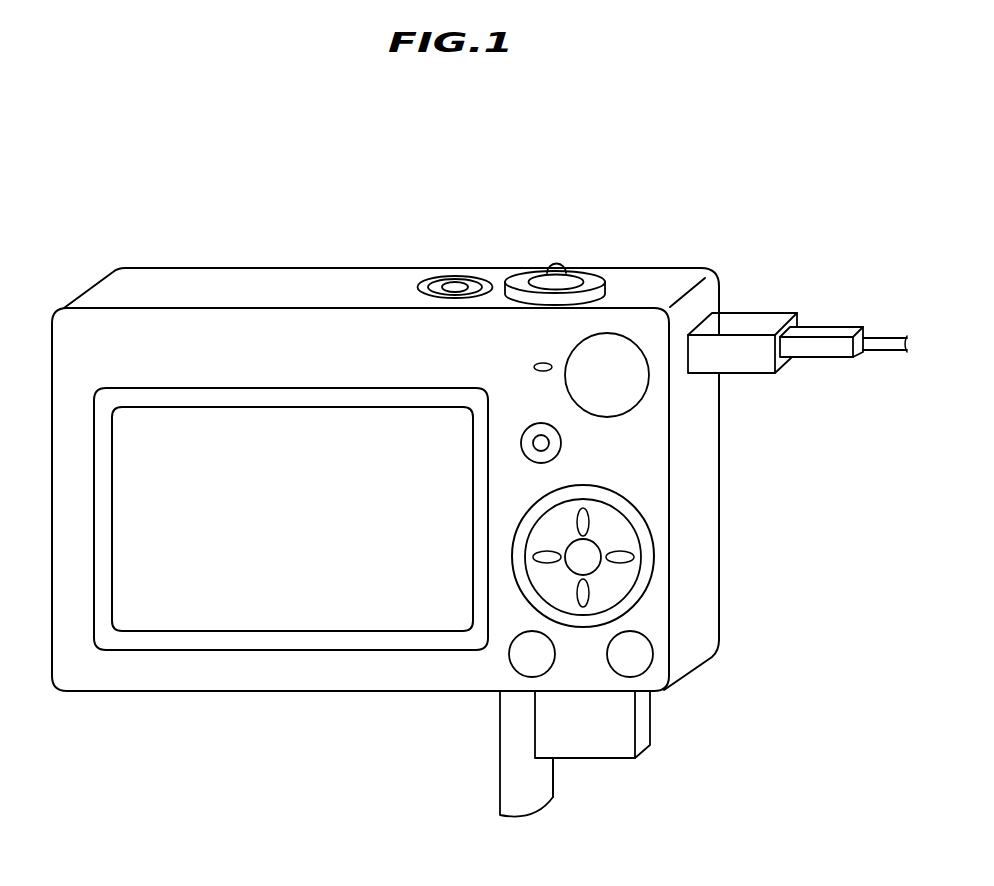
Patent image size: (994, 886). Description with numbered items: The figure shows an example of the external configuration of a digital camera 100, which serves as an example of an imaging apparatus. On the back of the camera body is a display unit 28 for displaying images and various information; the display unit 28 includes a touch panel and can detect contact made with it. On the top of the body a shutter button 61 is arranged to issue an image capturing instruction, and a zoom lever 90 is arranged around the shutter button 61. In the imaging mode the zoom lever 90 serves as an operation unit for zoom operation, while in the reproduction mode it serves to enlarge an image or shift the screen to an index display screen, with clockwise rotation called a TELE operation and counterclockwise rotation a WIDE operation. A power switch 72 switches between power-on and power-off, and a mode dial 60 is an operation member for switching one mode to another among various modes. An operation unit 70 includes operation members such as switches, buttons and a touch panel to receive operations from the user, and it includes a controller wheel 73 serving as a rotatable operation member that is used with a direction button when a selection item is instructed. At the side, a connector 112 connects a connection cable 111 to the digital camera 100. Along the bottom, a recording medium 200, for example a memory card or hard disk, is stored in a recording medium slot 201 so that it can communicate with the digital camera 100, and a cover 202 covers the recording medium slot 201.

The digital camera 100 is at (332, 230).
The display unit 28 is at (182, 417).
The power switch 72 is at (457, 285).
The shutter button 61 is at (575, 280).
The zoom lever 90 is at (553, 263).
The mode dial 60 is at (627, 352).
The controller wheel 73 is at (533, 498).
The operation unit 70 is at (577, 300).
The connector 112 is at (749, 318).
The connection cable 111 is at (826, 330).
The recording medium 200 is at (622, 732).
The recording medium slot 201 is at (548, 693).
The cover 202 is at (553, 797).